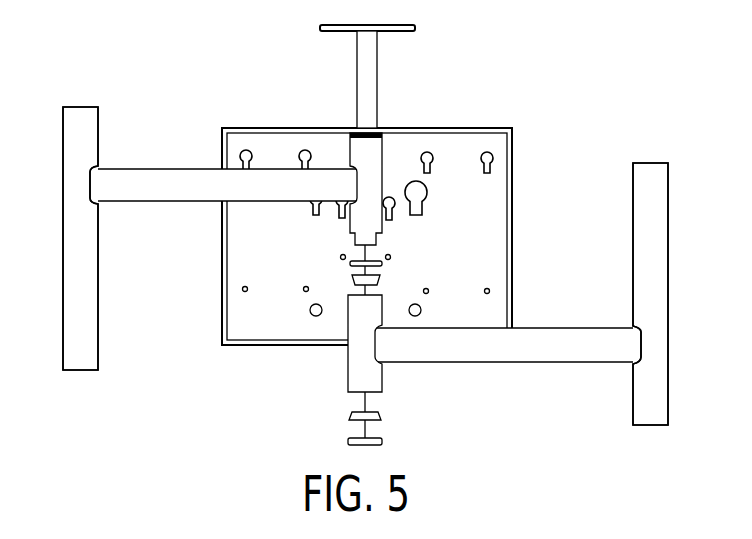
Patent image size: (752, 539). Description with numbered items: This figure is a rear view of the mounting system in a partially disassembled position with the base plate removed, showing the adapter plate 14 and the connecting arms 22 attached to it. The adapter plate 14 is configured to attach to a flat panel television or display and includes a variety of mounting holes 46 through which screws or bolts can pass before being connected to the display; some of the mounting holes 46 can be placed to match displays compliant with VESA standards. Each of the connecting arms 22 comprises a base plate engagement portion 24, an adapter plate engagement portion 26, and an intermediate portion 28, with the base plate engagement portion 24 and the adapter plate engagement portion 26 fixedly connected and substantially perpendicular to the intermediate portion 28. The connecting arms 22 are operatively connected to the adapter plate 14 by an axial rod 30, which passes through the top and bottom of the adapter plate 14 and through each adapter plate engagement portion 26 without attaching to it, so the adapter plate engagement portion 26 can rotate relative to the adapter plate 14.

The adapter plate 14 is at (467, 145).
The connecting arm 22 is at (63, 354).
The base plate engagement portion 24 is at (70, 283).
The adapter plate engagement portion 26 is at (355, 152).
The intermediate portion 28 is at (146, 177).
The axial rod 30 is at (370, 86).
The mounting holes 46 is at (396, 220).